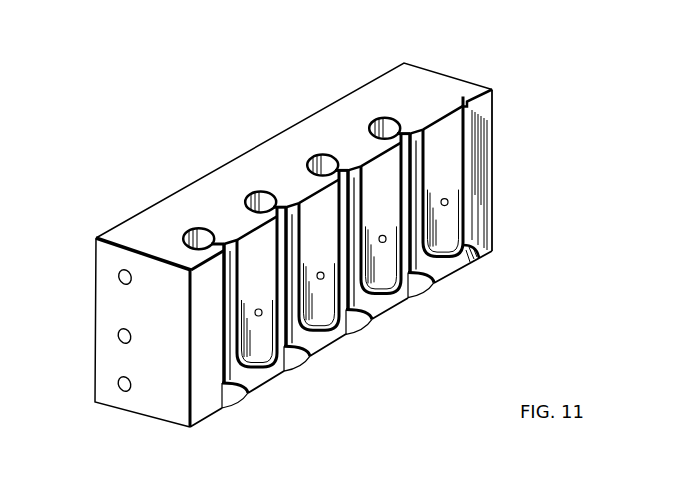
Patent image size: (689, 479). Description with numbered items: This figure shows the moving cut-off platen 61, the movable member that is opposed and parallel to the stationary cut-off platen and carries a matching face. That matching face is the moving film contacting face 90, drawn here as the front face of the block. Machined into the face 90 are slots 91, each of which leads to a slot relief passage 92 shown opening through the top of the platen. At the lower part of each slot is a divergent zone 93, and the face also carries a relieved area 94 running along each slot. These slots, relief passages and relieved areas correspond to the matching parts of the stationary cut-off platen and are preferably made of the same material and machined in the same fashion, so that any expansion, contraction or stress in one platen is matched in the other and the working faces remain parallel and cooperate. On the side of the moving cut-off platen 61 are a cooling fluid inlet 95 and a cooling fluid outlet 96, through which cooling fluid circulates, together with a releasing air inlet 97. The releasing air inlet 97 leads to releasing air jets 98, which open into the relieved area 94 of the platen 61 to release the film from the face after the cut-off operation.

The moving cut-off platen 61 is at (287, 255).
The moving film contacting face 90 is at (274, 269).
The slots 91 is at (225, 243).
The slot relief passage 92 is at (198, 228).
The divergent zone 93 is at (352, 349).
The relieved area 94 is at (343, 240).
The cooling fluid inlet 95 is at (120, 378).
The cooling fluid outlet 96 is at (118, 273).
The releasing air inlet 97 is at (121, 333).
The releasing air jets 98 is at (255, 311).